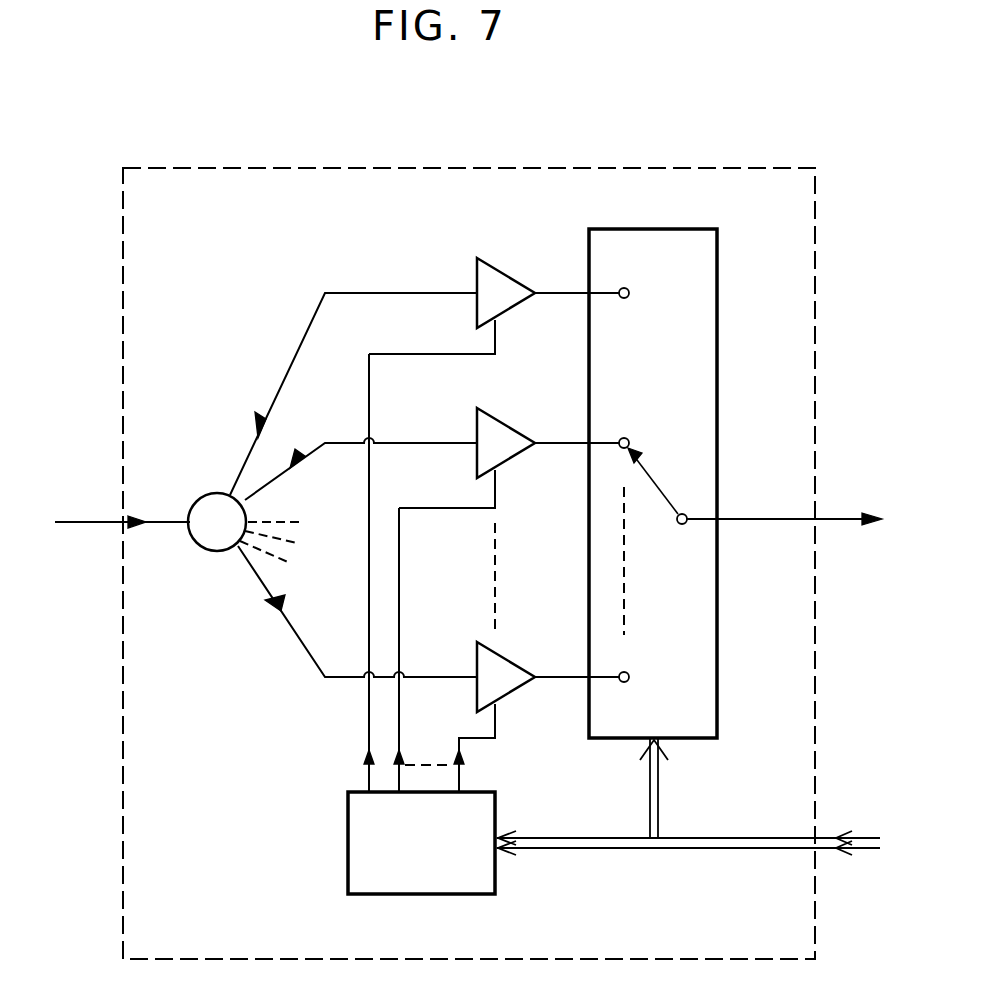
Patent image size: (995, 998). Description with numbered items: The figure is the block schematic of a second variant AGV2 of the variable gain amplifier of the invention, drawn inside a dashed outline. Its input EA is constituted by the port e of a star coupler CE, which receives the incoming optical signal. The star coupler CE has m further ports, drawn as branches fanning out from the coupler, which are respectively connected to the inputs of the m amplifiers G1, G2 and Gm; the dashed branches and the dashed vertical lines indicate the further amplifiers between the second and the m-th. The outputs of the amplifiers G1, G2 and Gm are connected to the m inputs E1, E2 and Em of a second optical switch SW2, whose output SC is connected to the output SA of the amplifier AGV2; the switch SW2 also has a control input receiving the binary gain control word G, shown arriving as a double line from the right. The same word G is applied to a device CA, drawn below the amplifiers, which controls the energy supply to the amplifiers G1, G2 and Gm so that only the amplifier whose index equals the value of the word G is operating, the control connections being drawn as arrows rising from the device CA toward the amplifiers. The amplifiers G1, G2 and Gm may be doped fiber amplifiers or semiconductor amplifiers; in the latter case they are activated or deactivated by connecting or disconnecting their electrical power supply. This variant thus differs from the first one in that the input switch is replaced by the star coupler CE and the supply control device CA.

The variable gain amplifier (second variant) AGV2 is at (757, 188).
The input of the amplifier EA is at (70, 520).
The port of the star coupler e is at (188, 518).
The star coupler CE is at (212, 510).
The first amplifier G1 is at (505, 290).
The second amplifier G2 is at (507, 440).
The m-th amplifier Gm is at (505, 672).
The second optical switch SW2 is at (685, 250).
The first input of the optical switch E1 is at (622, 299).
The second input of the optical switch E2 is at (624, 437).
The m-th input of the optical switch Em is at (622, 683).
The output of the optical switch SC is at (686, 530).
The output of the variable gain amplifier SA is at (845, 512).
The energy supply control device CA is at (428, 875).
The gain control word G is at (696, 797).